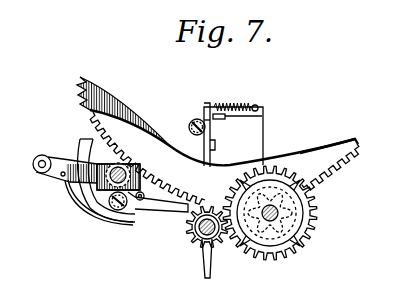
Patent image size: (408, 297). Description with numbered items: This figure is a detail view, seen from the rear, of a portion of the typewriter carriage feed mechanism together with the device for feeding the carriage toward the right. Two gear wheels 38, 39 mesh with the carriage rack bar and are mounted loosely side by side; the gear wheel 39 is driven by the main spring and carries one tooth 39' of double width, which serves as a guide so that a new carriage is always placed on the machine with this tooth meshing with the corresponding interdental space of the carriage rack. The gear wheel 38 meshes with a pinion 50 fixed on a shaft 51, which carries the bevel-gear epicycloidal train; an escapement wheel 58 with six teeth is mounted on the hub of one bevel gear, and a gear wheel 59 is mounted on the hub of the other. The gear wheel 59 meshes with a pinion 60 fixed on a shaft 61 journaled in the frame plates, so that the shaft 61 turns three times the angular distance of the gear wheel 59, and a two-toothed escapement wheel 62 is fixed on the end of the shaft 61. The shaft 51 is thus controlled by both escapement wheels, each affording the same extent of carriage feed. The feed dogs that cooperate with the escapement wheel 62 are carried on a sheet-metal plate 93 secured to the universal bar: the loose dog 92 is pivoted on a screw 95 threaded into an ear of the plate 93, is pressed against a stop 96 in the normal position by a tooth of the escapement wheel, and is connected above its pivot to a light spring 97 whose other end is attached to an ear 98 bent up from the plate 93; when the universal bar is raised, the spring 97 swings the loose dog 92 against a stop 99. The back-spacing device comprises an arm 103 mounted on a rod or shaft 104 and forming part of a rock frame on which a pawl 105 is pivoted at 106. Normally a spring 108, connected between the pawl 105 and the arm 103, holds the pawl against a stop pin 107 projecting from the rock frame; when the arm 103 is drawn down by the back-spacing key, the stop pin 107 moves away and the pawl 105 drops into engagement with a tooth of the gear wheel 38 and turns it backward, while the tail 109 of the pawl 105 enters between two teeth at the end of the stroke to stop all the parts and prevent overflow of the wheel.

The gear wheel 38 is at (122, 104).
The gear wheel 39 is at (327, 139).
The tooth 39' is at (335, 168).
The pinion 50 is at (288, 210).
The shaft 51 is at (266, 230).
The escapement wheel 58 is at (270, 218).
The gear wheel 59 is at (253, 258).
The pinion 60 is at (194, 243).
The shaft 61 is at (205, 246).
The two-toothed escapement wheel 62 is at (212, 262).
The loose dog 92 is at (215, 147).
The plate 93 is at (263, 137).
The screw 95 is at (194, 120).
The stop 96 is at (214, 158).
The spring 97 is at (232, 103).
The ear 98 is at (259, 107).
The stop 99 is at (220, 119).
The arm 103 is at (60, 165).
The rod or shaft 104 is at (128, 167).
The pawl 105 is at (150, 212).
The pivot 106 is at (118, 211).
The stop pin 107 is at (146, 193).
The spring 108 is at (73, 208).
The tail 109 is at (135, 158).